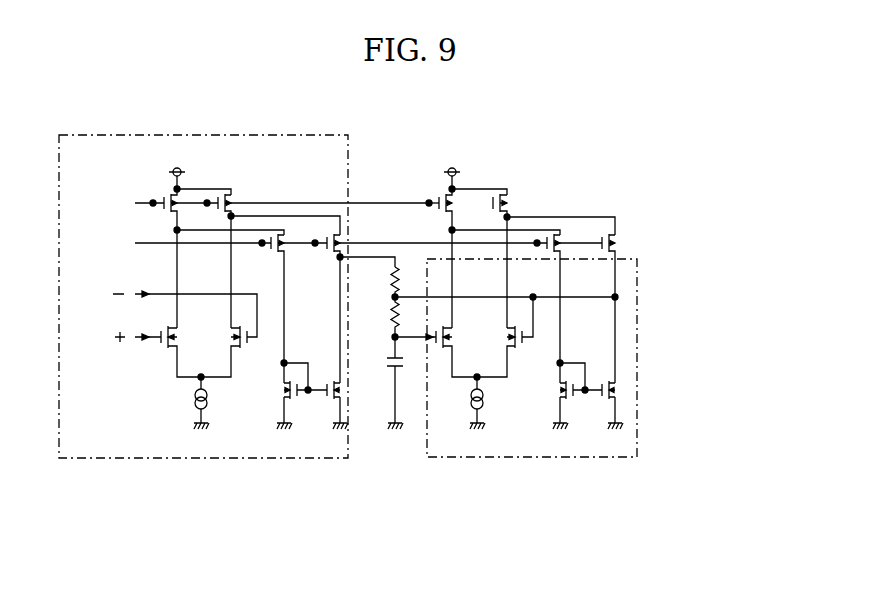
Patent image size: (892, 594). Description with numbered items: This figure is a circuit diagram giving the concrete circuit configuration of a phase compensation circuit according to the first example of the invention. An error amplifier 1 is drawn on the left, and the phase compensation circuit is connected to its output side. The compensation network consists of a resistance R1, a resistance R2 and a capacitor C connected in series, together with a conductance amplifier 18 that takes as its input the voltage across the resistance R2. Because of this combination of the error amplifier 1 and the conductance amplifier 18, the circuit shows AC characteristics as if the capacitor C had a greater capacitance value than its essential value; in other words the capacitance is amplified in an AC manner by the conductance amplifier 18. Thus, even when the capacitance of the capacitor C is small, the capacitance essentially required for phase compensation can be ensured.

The error amplifier 1 is at (128, 459).
The conductance amplifier 18 is at (636, 433).
The resistance R1 is at (407, 282).
The resistance R2 is at (407, 317).
The capacitor C is at (404, 380).